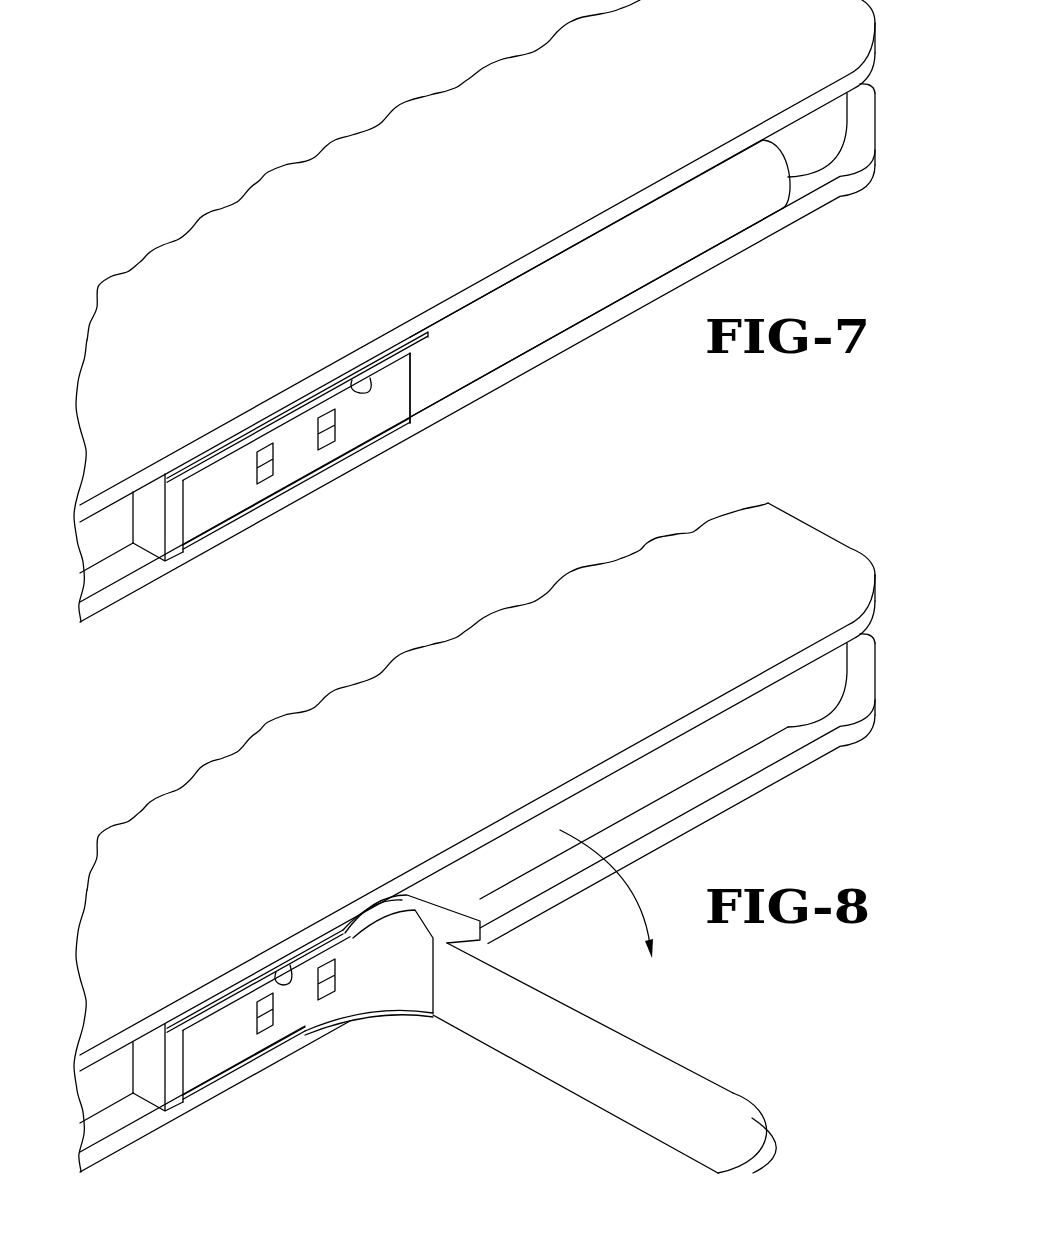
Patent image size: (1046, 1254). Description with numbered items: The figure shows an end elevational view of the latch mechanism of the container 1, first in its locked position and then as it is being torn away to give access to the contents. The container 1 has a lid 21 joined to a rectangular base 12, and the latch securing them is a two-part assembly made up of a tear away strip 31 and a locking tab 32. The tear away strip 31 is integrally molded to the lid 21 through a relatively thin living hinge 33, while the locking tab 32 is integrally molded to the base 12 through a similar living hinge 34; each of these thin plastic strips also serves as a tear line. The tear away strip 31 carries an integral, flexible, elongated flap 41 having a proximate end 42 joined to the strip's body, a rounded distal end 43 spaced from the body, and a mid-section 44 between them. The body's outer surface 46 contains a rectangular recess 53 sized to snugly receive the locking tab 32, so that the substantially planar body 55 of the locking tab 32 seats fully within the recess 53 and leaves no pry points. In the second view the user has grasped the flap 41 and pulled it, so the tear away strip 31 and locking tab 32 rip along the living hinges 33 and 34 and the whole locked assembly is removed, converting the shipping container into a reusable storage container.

In FIG. 7, the container 1 is at (474, 323).
In FIG. 8, the container 1 is at (474, 858).
In FIG. 7, the base 12 is at (557, 360).
In FIG. 8, the base 12 is at (752, 797).
In FIG. 7, the lid 21 is at (385, 106).
In FIG. 8, the lid 21 is at (385, 656).
In FIG. 7, the tear away strip 31 is at (150, 548).
In FIG. 8, the tear away strip 31 is at (150, 1094).
In FIG. 7, the locking tab 32 is at (287, 489).
In FIG. 8, the locking tab 32 is at (250, 1058).
In FIG. 7, the living hinge 33 is at (222, 445).
In FIG. 8, the living hinge 33 is at (222, 992).
In FIG. 7, the living hinge 34 is at (318, 475).
In FIG. 8, the living hinge 34 is at (300, 1037).
In FIG. 7, the flap 41 is at (635, 295).
In FIG. 8, the flap 41 is at (540, 1054).
In FIG. 7, the proximate end 42 is at (425, 395).
In FIG. 8, the proximate end 42 is at (453, 1010).
In FIG. 7, the distal end 43 is at (765, 193).
In FIG. 8, the distal end 43 is at (728, 1163).
In FIG. 7, the mid-section 44 is at (578, 302).
In FIG. 8, the mid-section 44 is at (583, 1085).
In FIG. 7, the outer surface 46 is at (172, 550).
In FIG. 8, the outer surface 46 is at (172, 1095).
In FIG. 7, the recess 53 is at (370, 378).
In FIG. 8, the recess 53 is at (290, 965).
In FIG. 7, the planar body 55 is at (358, 433).
In FIG. 8, the planar body 55 is at (203, 1067).